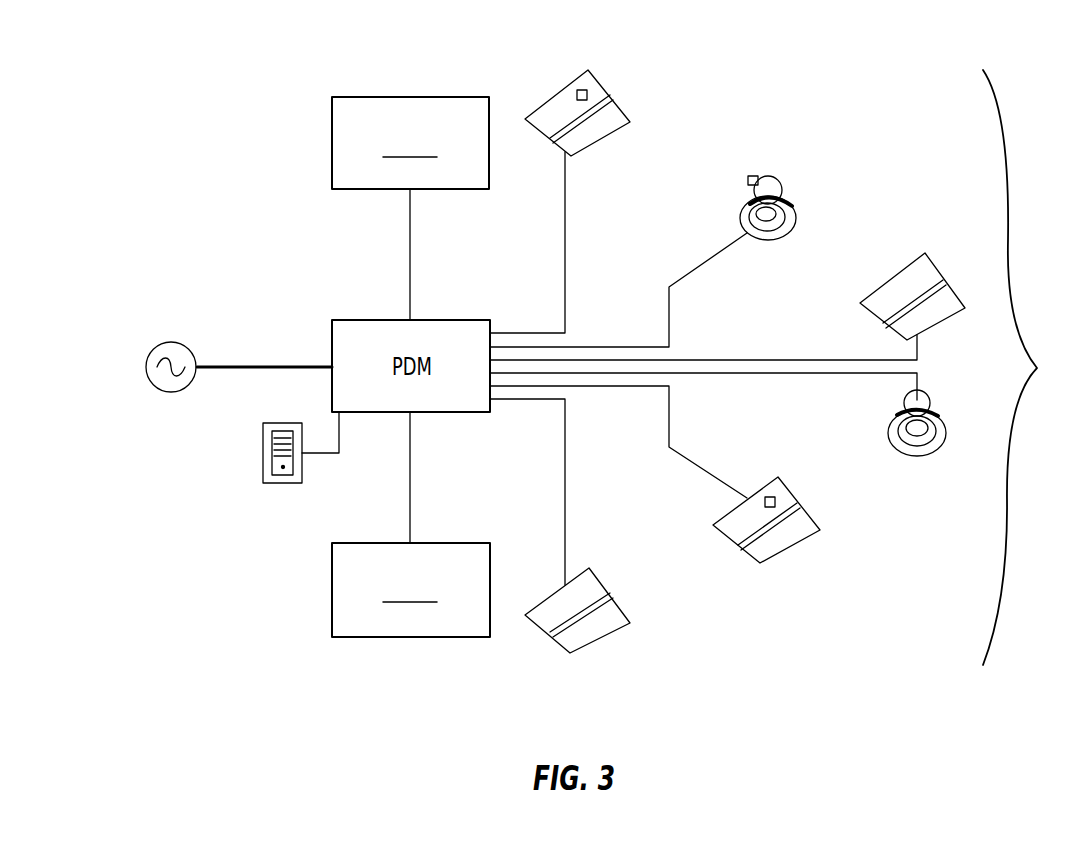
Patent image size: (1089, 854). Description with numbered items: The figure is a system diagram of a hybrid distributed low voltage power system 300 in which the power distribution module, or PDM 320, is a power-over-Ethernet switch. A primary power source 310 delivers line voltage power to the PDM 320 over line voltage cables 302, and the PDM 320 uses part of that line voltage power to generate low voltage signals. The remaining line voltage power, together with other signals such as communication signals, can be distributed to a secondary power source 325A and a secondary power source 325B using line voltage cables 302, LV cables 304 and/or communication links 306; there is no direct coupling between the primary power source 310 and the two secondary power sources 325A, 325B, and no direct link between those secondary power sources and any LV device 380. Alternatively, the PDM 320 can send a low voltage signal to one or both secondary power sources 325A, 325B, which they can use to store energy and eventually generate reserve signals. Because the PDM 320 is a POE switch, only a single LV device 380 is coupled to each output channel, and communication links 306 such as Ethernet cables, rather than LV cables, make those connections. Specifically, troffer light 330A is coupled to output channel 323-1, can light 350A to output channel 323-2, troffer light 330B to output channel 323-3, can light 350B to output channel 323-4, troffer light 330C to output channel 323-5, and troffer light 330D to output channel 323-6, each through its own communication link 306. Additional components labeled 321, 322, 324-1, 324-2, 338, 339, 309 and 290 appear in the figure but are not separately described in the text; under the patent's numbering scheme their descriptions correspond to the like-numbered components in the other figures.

The hybrid distributed low voltage power system 300 is at (848, 52).
The line voltage cables 302 is at (245, 365).
The LV cables 304 is at (410, 250).
The communication links 306 is at (565, 266).
The sensor 309 is at (582, 90).
The primary power source 310 is at (146, 366).
The power distribution module (PDM) 320 is at (332, 322).
The power input 321 is at (332, 366).
The controller port 322 is at (340, 414).
The output channel 323-1 is at (492, 334).
The output channel 323-2 is at (488, 345).
The output channel 323-3 is at (490, 347).
The output channel 323-4 is at (490, 375).
The output channel 323-5 is at (490, 386).
The output channel 323-6 is at (492, 402).
The expansion port 324-1 is at (410, 319).
The expansion port 324-2 is at (413, 414).
The secondary power source 325A is at (410, 143).
The secondary power source 325B is at (411, 590).
The troffer light 330A is at (600, 146).
The troffer light 330B is at (945, 320).
The troffer light 330C is at (787, 548).
The troffer light 330D is at (600, 641).
The power connection 338 is at (410, 192).
The communication connection 339 is at (435, 527).
The can light 350A is at (778, 182).
The can light 350B is at (920, 456).
The LV device 380 is at (1034, 367).
The controller 290 is at (263, 453).